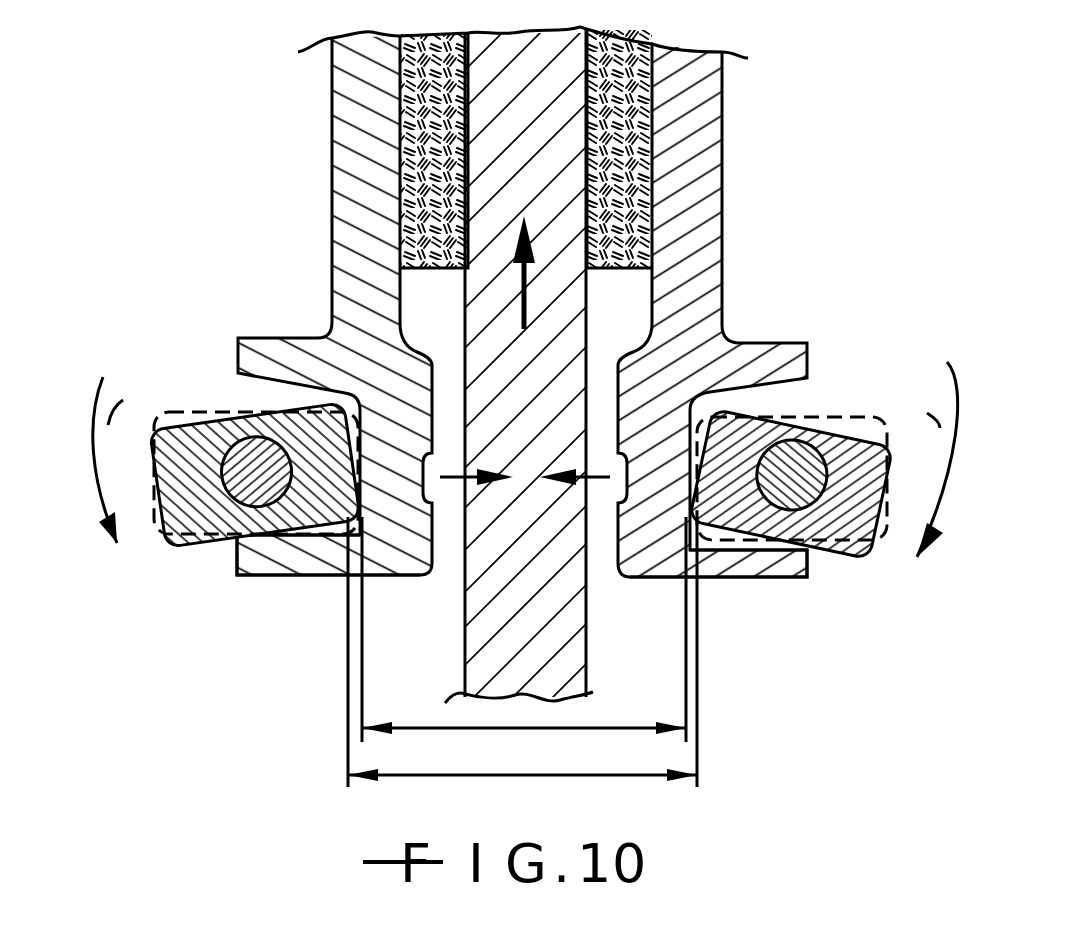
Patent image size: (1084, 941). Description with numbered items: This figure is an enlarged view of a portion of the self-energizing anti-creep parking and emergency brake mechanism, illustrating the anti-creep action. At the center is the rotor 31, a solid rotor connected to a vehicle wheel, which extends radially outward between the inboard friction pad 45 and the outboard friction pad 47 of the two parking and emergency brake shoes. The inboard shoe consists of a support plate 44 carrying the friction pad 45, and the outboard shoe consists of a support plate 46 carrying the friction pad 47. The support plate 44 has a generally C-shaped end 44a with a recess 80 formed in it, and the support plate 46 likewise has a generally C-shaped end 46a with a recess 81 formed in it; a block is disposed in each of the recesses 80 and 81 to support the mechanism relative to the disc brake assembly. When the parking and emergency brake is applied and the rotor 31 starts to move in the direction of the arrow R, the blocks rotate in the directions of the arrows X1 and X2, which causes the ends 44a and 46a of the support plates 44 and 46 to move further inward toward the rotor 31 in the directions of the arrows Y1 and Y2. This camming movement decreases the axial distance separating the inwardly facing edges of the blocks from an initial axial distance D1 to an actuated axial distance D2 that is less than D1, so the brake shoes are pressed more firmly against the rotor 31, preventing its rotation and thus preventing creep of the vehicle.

The rotor 31 is at (582, 640).
The support plate 44 is at (340, 102).
The C-shaped end 44a is at (255, 567).
The friction pad 45 is at (410, 176).
The support plate 46 is at (707, 138).
The C-shaped end 46a is at (750, 573).
The friction pad 47 is at (655, 97).
The recess 80 is at (252, 376).
The recess 81 is at (783, 392).
The arrow R is at (527, 302).
The arrow X1 is at (99, 439).
The arrow X2 is at (928, 449).
The arrow Y1 is at (447, 478).
The arrow Y2 is at (592, 478).
The initial axial distance D1 is at (640, 777).
The actuated axial distance D2 is at (613, 727).